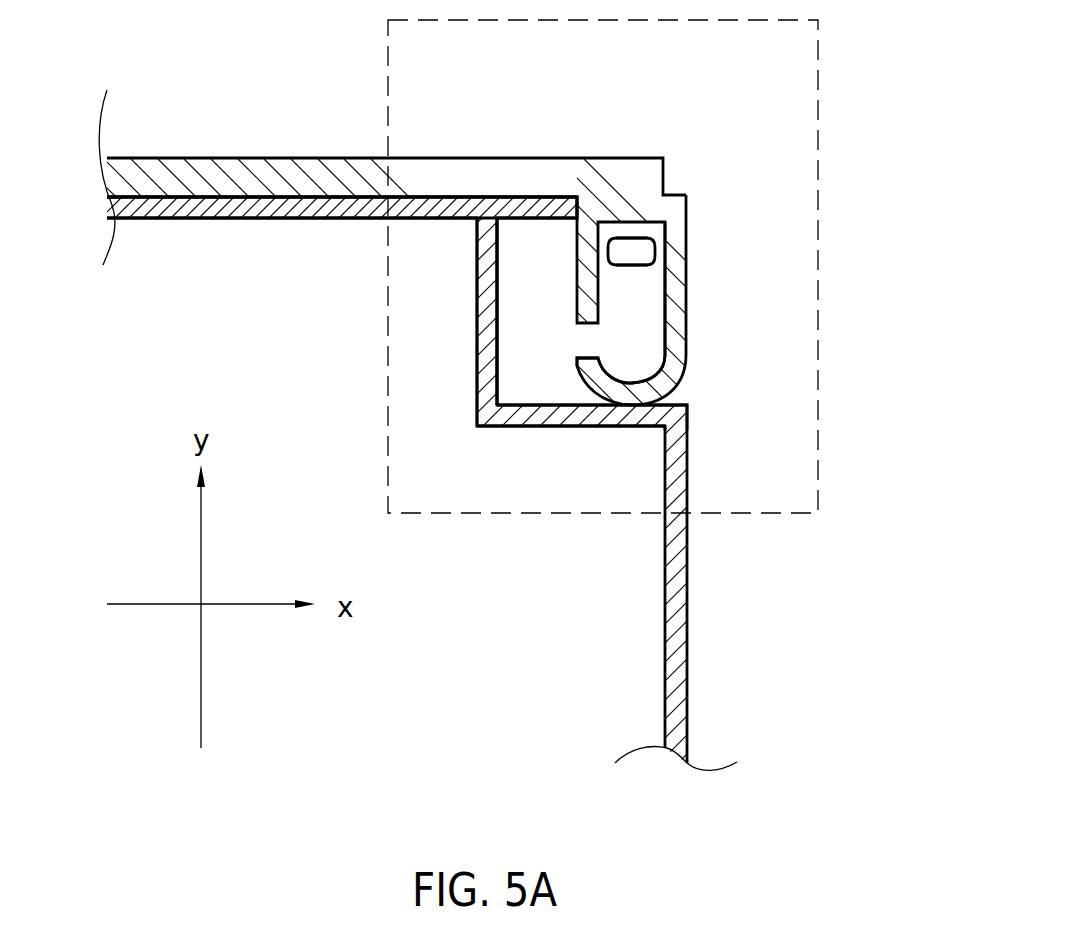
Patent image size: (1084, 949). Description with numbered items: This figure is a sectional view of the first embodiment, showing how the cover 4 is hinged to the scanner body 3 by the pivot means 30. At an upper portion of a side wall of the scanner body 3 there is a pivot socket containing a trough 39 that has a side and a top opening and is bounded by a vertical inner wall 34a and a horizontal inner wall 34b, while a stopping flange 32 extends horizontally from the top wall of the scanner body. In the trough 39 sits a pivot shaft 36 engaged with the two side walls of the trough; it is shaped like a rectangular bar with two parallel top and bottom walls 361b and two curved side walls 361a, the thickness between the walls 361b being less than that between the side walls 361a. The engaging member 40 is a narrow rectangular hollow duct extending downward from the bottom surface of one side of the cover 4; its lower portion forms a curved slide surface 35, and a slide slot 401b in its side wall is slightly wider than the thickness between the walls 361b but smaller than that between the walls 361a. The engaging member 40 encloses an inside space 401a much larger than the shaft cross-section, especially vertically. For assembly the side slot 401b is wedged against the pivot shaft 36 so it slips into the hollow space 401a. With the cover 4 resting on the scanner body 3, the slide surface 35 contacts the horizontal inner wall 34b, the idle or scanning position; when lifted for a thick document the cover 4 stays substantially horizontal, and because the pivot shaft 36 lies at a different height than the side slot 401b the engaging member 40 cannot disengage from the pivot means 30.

The scanner body 3 is at (623, 639).
The cover 4 is at (264, 178).
The pivot means 30 is at (790, 105).
The stopping flange 32 is at (537, 208).
The vertical inner wall 34a is at (487, 398).
The horizontal inner wall 34b is at (550, 415).
The curved slide surface 35 is at (685, 385).
The pivot shaft 36 is at (645, 253).
The curved side walls 361a is at (652, 262).
The top and bottom walls 361b is at (632, 238).
The trough 39 is at (522, 295).
The engaging member 40 is at (617, 155).
The inside space 401a is at (637, 333).
The slide slot 401b is at (582, 338).